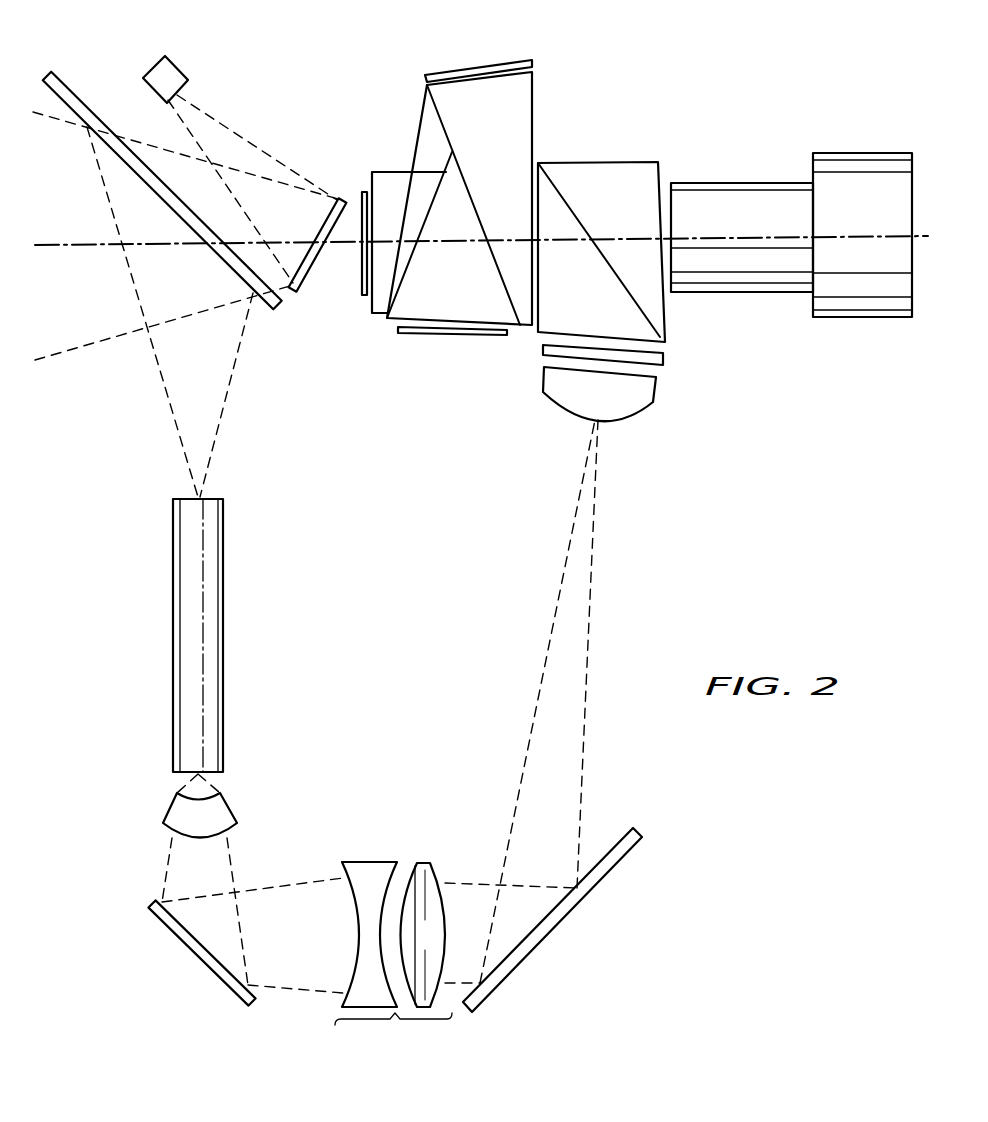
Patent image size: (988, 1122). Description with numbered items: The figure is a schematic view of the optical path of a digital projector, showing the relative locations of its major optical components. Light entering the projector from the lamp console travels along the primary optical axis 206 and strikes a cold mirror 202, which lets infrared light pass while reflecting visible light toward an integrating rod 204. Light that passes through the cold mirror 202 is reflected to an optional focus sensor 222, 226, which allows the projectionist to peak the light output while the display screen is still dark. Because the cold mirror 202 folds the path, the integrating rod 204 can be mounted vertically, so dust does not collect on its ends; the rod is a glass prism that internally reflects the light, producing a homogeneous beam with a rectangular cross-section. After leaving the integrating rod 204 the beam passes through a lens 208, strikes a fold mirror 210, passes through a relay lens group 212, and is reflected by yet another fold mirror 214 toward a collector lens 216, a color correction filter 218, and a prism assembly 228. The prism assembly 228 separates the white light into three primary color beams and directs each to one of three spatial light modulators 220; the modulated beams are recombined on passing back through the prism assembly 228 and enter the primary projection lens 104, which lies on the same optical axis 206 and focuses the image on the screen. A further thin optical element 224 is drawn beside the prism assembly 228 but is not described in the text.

The primary projection lens 104 is at (758, 183).
The cold mirror 202 is at (82, 99).
The integrating rod 204 is at (173, 679).
The primary optical axis 206 is at (92, 248).
The lens 208 is at (172, 799).
The fold mirror 210 is at (193, 953).
The relay lens group 212 is at (393, 962).
The mirror 214 is at (555, 930).
The collector lens 216 is at (632, 420).
The color correction filter 218 is at (665, 358).
The spatial light modulators 220 is at (442, 73).
The optional focus sensor 222 is at (463, 337).
The filter 224 is at (365, 295).
The optional focus sensor 226 is at (178, 66).
The prism assembly 228 is at (358, 40).